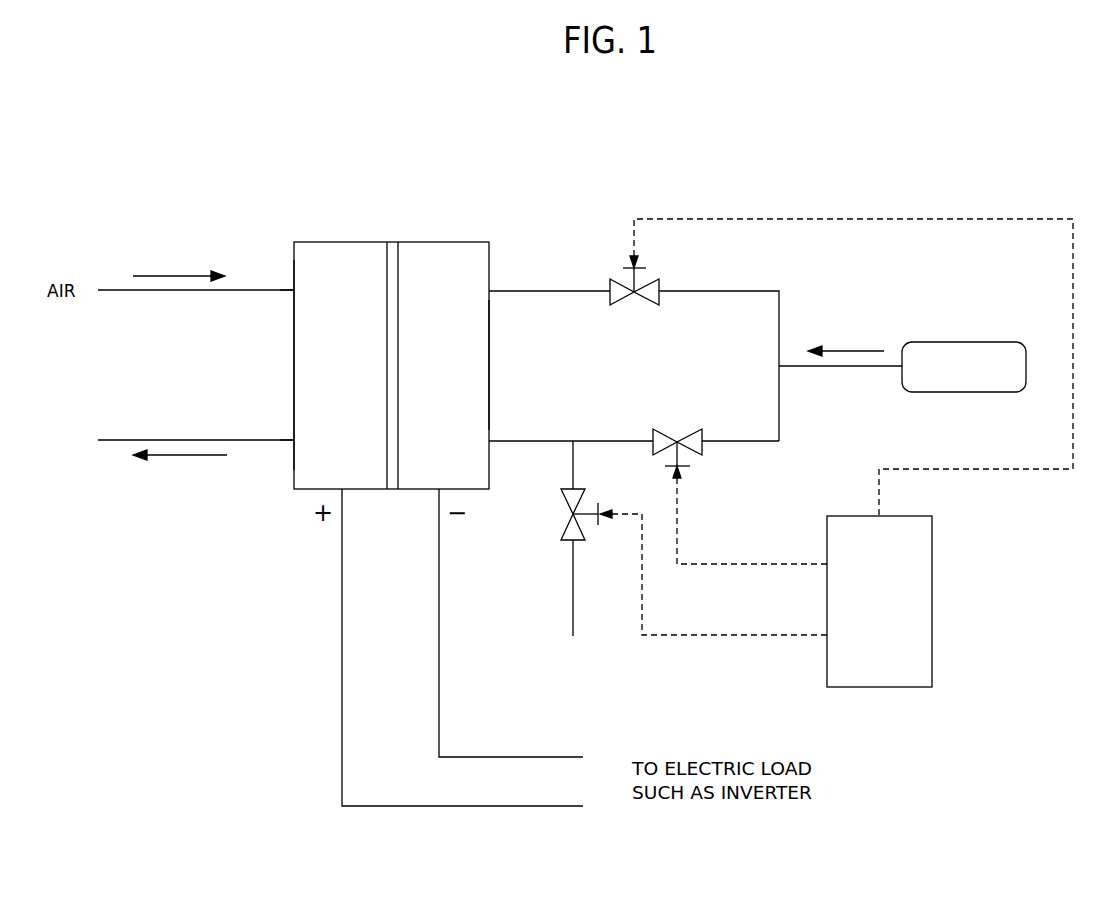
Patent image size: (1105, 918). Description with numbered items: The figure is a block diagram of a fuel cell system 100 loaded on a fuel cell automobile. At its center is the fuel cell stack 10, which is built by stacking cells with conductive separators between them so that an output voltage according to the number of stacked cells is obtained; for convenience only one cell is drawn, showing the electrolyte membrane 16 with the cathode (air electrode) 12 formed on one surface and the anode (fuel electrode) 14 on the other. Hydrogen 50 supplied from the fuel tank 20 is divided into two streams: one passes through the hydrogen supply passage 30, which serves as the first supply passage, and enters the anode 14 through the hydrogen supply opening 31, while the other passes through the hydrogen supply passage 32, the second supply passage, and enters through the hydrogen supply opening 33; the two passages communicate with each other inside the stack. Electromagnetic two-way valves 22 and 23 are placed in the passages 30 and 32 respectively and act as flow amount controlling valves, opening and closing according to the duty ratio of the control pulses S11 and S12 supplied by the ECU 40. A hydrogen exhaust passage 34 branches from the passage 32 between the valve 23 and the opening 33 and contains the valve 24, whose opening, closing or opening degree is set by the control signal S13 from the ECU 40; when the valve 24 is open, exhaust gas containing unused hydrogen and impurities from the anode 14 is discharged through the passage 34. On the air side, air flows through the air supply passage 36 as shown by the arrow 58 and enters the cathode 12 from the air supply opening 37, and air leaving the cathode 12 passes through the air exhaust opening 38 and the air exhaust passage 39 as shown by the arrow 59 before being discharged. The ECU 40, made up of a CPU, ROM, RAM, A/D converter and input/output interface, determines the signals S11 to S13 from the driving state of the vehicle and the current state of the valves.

The fuel cell system 100 is at (568, 115).
The fuel cell stack 10 is at (392, 383).
The cathode (air electrode) 12 is at (294, 357).
The anode (fuel electrode) 14 is at (489, 330).
The electrolyte membrane 16 is at (390, 489).
The fuel tank 20 is at (962, 342).
The valve 22 is at (650, 302).
The valve 23 is at (665, 430).
The valve 24 is at (565, 532).
The hydrogen supply passage 30 is at (725, 291).
The hydrogen supply opening 31 is at (492, 290).
The hydrogen supply passage 32 is at (728, 441).
The hydrogen supply opening 33 is at (492, 443).
The hydrogen exhaust passage 34 is at (573, 618).
The air supply passage 36 is at (112, 290).
The air supply opening 37 is at (292, 290).
The air exhaust opening 38 is at (292, 441).
The air exhaust passage 39 is at (112, 440).
The ECU 40 is at (932, 598).
The hydrogen 50 is at (840, 350).
The arrow 58 is at (190, 276).
The arrow 59 is at (165, 456).
The control signal S11 is at (812, 218).
The control signal S12 is at (757, 563).
The control signal S13 is at (733, 636).